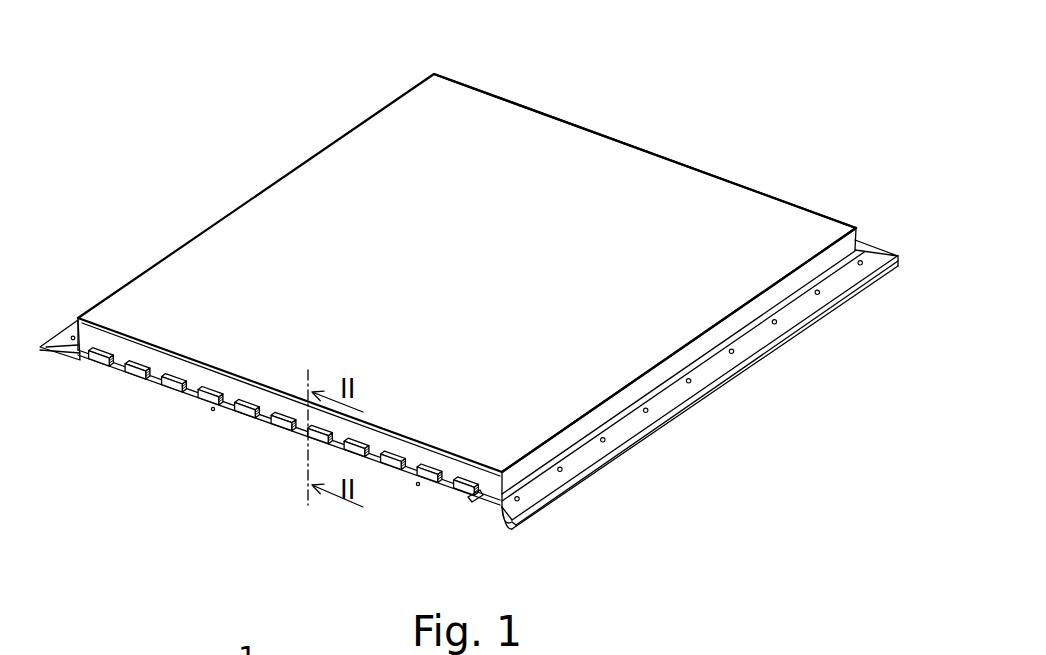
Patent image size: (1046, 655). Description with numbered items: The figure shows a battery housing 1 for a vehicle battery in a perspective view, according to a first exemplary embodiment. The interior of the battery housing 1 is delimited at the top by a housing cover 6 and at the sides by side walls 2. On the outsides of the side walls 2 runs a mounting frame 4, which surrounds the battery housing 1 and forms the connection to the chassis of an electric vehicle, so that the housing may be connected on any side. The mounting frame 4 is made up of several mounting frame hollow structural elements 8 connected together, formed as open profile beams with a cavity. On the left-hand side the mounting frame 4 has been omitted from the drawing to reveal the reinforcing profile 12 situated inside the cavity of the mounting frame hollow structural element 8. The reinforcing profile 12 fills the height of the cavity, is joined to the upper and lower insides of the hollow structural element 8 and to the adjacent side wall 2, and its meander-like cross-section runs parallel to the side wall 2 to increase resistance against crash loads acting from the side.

The battery housing 1 is at (665, 127).
The side wall 2 is at (128, 343).
The mounting frame 4 is at (740, 385).
The housing cover 6 is at (317, 233).
The mounting frame hollow structural element 8 is at (77, 338).
The reinforcing profile 12 is at (237, 415).